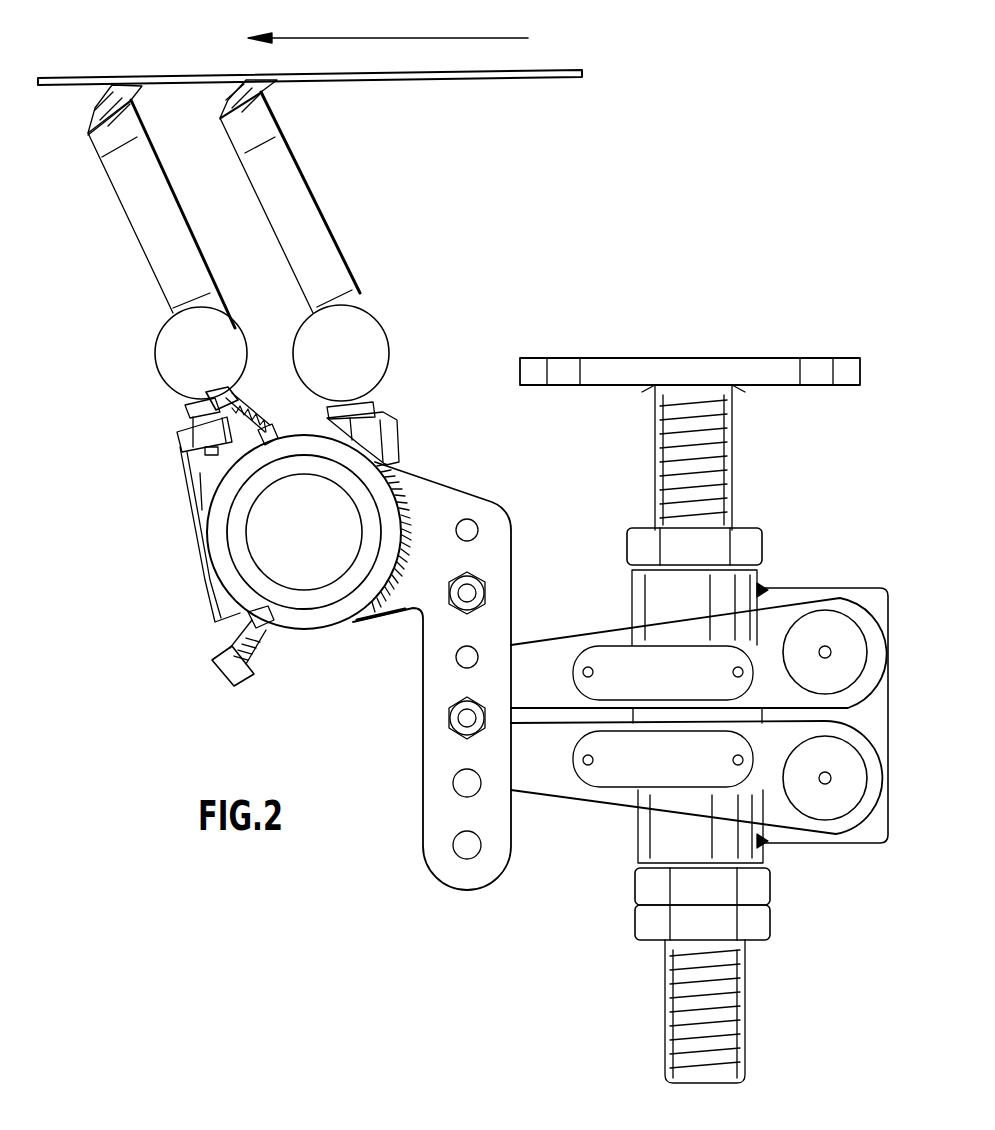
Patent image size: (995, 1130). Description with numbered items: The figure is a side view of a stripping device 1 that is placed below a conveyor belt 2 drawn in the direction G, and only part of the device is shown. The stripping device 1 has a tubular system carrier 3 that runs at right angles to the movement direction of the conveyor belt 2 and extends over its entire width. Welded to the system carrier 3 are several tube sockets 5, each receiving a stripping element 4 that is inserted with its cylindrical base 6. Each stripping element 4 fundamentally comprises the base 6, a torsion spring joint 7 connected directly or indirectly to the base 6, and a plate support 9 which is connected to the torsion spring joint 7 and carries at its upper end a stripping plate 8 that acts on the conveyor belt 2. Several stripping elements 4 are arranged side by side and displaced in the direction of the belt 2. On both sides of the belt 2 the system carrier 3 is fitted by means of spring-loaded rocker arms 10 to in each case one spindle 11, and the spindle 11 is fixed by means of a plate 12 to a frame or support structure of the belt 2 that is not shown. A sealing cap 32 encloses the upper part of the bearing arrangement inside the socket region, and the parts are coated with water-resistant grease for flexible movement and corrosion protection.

The stripping device 1 is at (522, 935).
The conveyor belt 2 is at (490, 78).
The system carrier 3 is at (350, 503).
The stripping element 4 is at (225, 210).
The tube socket 5 is at (188, 487).
The base 6 is at (197, 536).
The torsion spring joint 7 is at (183, 343).
The stripping plate 8 is at (108, 100).
The plate support 9 is at (118, 174).
The spring-loaded rocker arm 10 is at (533, 683).
The spindle 11 is at (745, 987).
The plate 12 is at (697, 358).
The sealing cap 32 is at (180, 443).
The direction of conveyor belt movement G is at (477, 36).